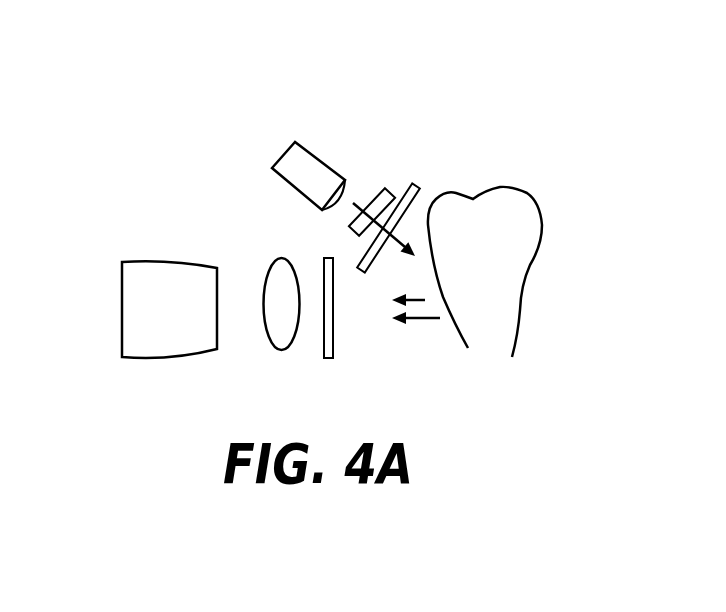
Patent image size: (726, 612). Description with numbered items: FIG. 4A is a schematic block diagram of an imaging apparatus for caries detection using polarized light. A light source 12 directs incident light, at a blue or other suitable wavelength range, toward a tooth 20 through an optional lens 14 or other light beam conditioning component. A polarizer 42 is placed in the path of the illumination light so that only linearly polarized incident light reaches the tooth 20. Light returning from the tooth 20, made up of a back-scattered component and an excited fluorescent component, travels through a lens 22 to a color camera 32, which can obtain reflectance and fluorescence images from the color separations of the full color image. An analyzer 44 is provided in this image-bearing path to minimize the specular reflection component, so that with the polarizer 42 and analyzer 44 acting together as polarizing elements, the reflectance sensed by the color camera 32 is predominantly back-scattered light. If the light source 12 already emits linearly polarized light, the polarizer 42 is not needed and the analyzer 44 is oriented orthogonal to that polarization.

The light source 12 is at (294, 140).
The lens 14 is at (393, 189).
The tooth 20 is at (543, 222).
The lens 22 is at (280, 258).
The color camera 32 is at (132, 262).
The polarizer 42 is at (422, 188).
The analyzer 44 is at (328, 358).